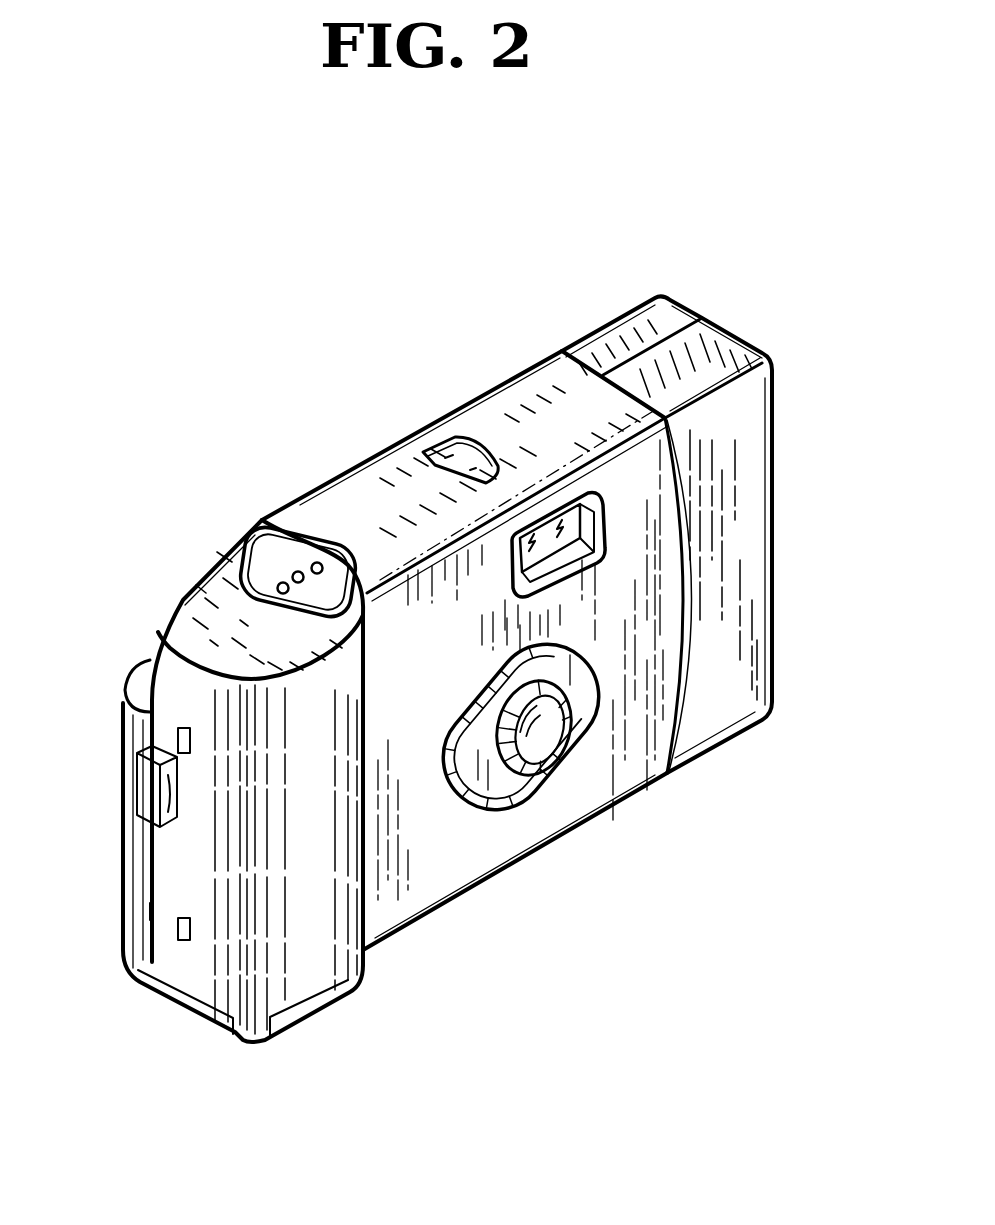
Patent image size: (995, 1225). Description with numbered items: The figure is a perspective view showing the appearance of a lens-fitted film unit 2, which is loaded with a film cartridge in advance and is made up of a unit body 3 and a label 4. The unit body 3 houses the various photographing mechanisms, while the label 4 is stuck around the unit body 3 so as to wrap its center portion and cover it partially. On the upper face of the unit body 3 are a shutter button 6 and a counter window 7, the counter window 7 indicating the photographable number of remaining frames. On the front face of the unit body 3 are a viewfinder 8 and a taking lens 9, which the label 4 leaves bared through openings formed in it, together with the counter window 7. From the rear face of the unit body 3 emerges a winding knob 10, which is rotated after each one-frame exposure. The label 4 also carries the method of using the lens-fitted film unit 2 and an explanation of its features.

The lens-fitted film unit 2 is at (530, 258).
The unit body 3 is at (756, 755).
The label 4 is at (380, 928).
The shutter button 6 is at (260, 583).
The counter window 7 is at (452, 453).
The viewfinder 8 is at (553, 508).
The taking lens 9 is at (525, 740).
The winding knob 10 is at (147, 643).